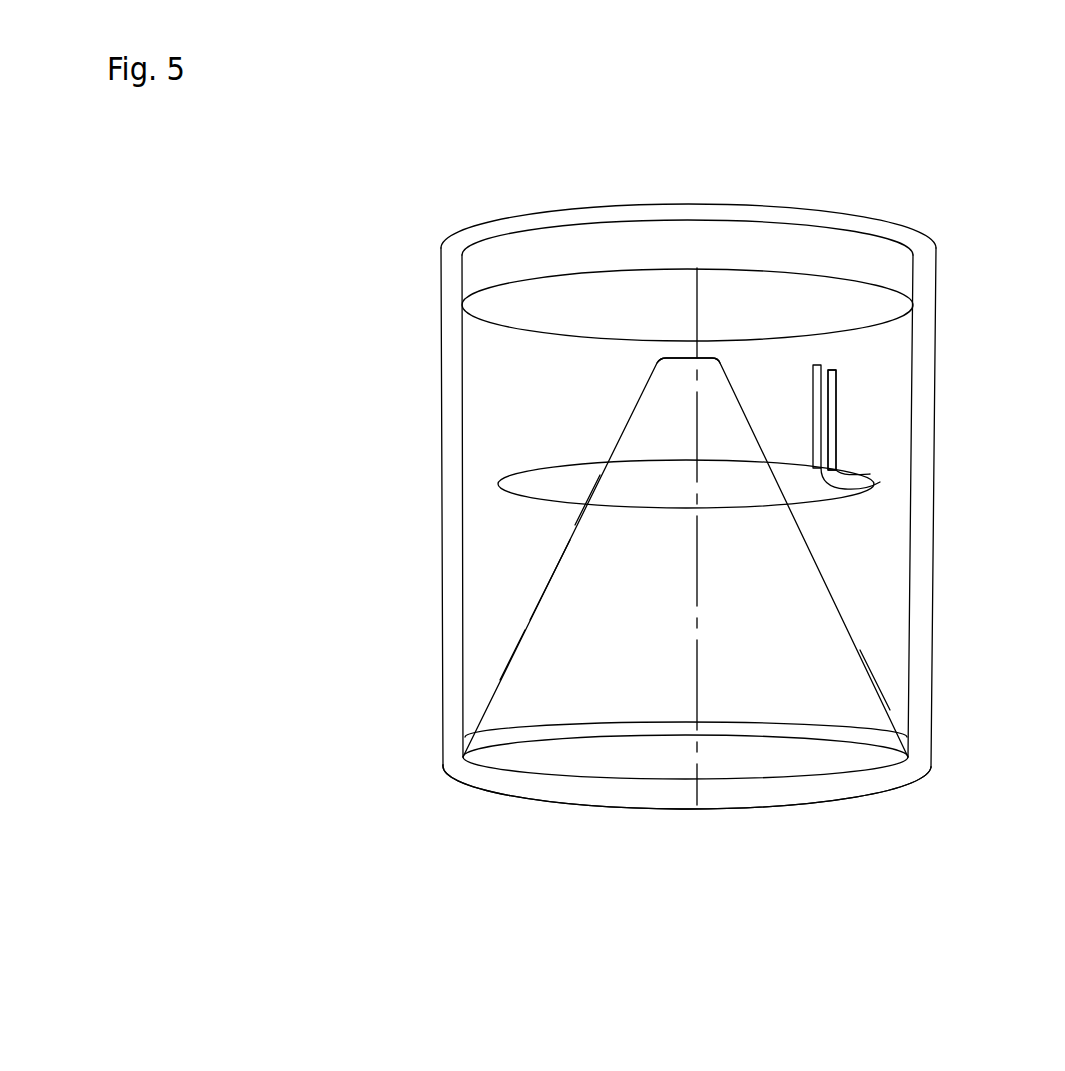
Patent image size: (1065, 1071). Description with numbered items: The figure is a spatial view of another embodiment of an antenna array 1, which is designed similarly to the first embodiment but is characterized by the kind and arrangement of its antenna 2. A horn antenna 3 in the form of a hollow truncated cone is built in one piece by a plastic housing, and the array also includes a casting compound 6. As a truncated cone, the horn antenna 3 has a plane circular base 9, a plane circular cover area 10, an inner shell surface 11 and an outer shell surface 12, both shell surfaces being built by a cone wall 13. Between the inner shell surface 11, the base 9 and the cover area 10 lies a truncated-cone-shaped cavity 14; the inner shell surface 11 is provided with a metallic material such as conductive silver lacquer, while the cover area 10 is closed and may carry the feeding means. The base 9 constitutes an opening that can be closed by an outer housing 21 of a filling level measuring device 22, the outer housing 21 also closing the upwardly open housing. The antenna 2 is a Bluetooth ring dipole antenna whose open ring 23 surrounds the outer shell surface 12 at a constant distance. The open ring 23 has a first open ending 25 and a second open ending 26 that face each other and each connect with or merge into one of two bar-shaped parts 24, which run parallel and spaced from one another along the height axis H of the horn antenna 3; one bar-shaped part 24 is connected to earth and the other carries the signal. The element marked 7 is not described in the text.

The antenna array 1 is at (842, 263).
The antenna 2 is at (852, 428).
The horn antenna 3 is at (863, 637).
The casting compound 6 is at (493, 607).
The vessel bottom 7 is at (655, 760).
The base 9 is at (723, 795).
The cover area 10 is at (697, 368).
The inner shell surface 11 is at (514, 672).
The outer shell surface 12 is at (547, 582).
The cone wall 13 is at (572, 535).
The cavity 14 is at (837, 685).
The outer housing 21 is at (441, 343).
The filling level measuring device 22 is at (310, 448).
The open ring 23 is at (820, 507).
The bar-shaped parts 24 is at (837, 402).
The first open ending 25 is at (870, 474).
The second open ending 26 is at (880, 482).
The height axis H is at (687, 515).